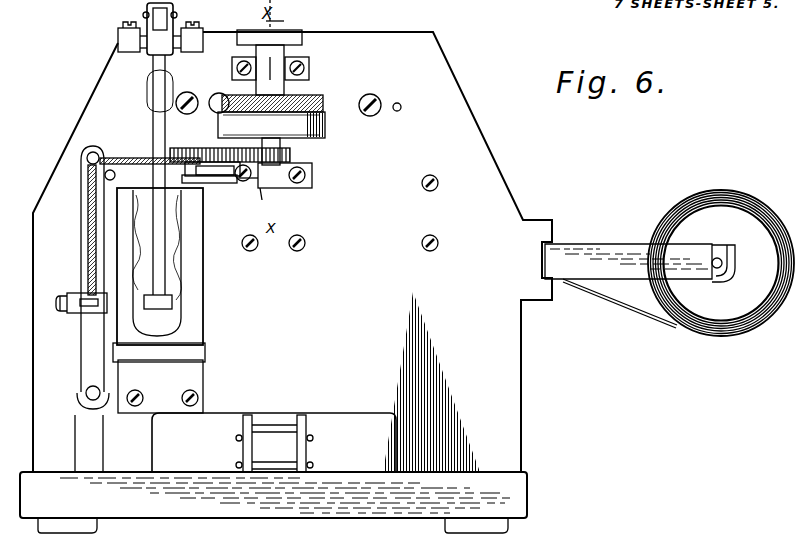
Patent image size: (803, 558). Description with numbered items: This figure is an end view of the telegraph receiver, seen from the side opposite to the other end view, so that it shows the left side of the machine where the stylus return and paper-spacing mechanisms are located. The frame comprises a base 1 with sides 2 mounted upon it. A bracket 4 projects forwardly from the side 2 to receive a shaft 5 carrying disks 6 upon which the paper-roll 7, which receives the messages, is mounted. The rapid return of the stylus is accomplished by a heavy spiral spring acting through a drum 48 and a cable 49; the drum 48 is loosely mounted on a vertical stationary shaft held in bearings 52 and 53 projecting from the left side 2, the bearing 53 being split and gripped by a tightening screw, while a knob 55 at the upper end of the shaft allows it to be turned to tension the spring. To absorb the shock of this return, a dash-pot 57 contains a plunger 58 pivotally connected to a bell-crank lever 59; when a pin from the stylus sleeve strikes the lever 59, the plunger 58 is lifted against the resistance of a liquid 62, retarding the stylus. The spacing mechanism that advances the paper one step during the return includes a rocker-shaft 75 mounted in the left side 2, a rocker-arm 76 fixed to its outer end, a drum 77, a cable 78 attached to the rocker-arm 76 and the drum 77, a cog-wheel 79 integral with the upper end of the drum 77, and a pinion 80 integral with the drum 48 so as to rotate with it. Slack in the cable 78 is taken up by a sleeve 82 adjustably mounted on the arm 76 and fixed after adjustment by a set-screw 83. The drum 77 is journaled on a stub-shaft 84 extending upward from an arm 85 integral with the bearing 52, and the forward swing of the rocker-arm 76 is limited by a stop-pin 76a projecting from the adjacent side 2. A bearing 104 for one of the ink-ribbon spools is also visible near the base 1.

The base 1 is at (522, 497).
The side 2 is at (510, 383).
The bracket 4 is at (607, 246).
The shaft 5 is at (716, 270).
The disk 6 is at (713, 313).
The paper-roll 7 is at (730, 337).
The drum 48 is at (325, 126).
The cable 49 is at (320, 107).
The bearing 52 is at (280, 180).
The bearing 53 is at (309, 62).
The knob 55 is at (302, 37).
The dash-pot 57 is at (204, 339).
The plunger 58 is at (203, 312).
The bell-crank lever 59 is at (152, 14).
The liquid 62 is at (203, 289).
The rocker-shaft 75 is at (66, 431).
The rocker-arm 76 is at (81, 241).
The stop-pin 76a is at (104, 175).
The drum 77 is at (215, 186).
The cable 78 is at (118, 157).
The cog-wheel 79 is at (200, 149).
The pinion 80 is at (291, 154).
The sleeve 82 is at (70, 298).
The set-screw 83 is at (60, 308).
The stub-shaft 84 is at (236, 186).
The arm 85 is at (268, 205).
The bearing 104 is at (300, 472).